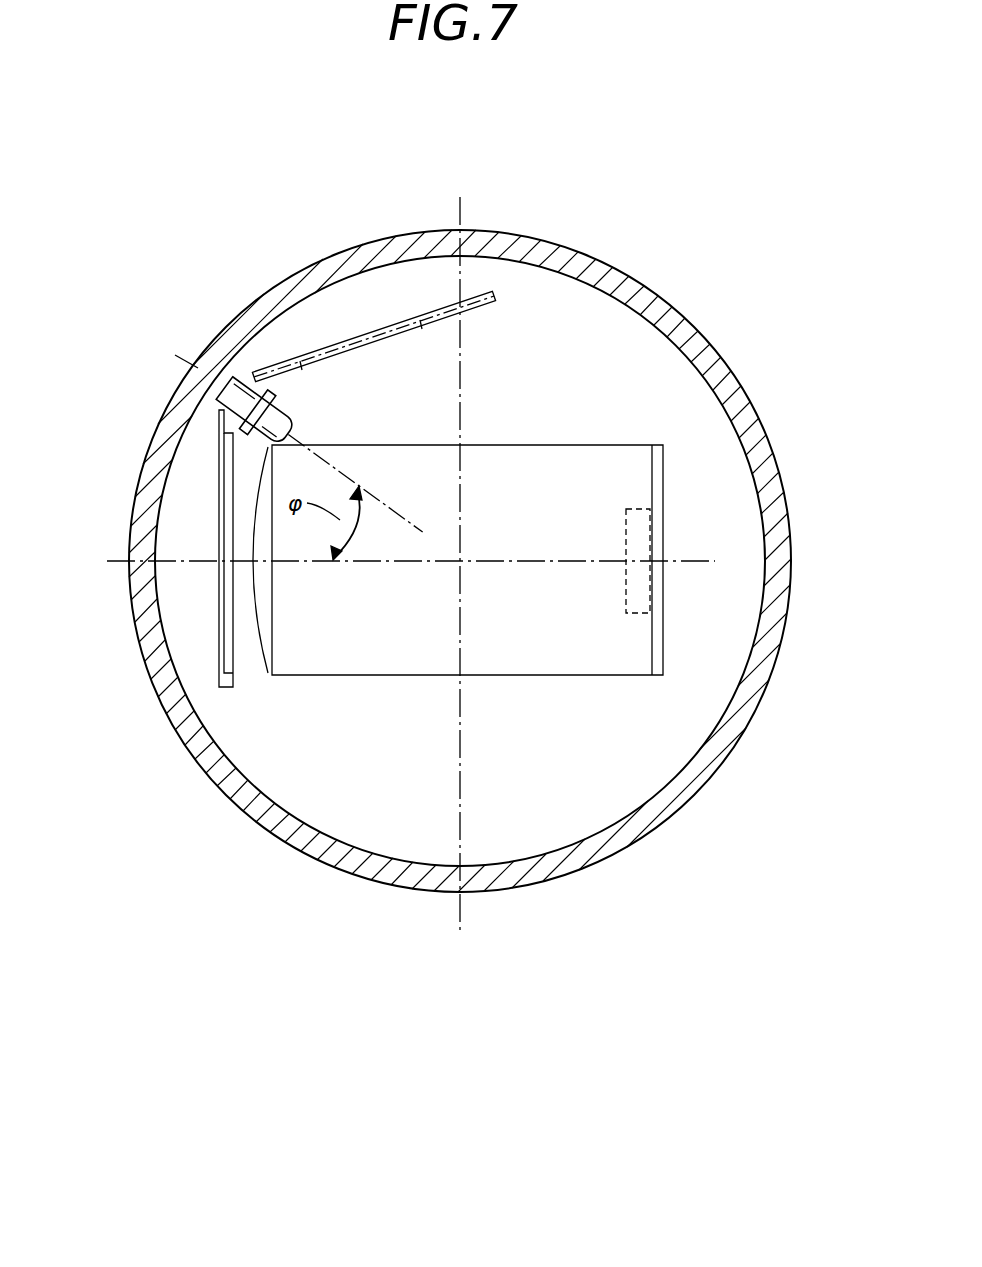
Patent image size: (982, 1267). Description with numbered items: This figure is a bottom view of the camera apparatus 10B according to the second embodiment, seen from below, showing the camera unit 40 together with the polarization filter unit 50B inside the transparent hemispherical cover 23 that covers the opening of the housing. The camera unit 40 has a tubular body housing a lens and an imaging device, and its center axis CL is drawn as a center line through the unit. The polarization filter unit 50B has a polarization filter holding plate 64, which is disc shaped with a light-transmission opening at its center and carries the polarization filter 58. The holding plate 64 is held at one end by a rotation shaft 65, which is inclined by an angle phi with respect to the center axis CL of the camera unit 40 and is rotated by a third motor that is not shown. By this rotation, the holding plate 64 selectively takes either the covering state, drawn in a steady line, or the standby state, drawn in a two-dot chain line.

The camera apparatus 10B is at (388, 968).
The transparent hemispherical cover 23 is at (330, 857).
The camera unit 40 is at (613, 683).
The polarization filter unit 50B is at (213, 423).
The polarization filter 58 is at (220, 514).
The polarization filter holding plate 64 is at (507, 293).
The rotation shaft 65 is at (232, 380).
The center axis CL is at (186, 562).